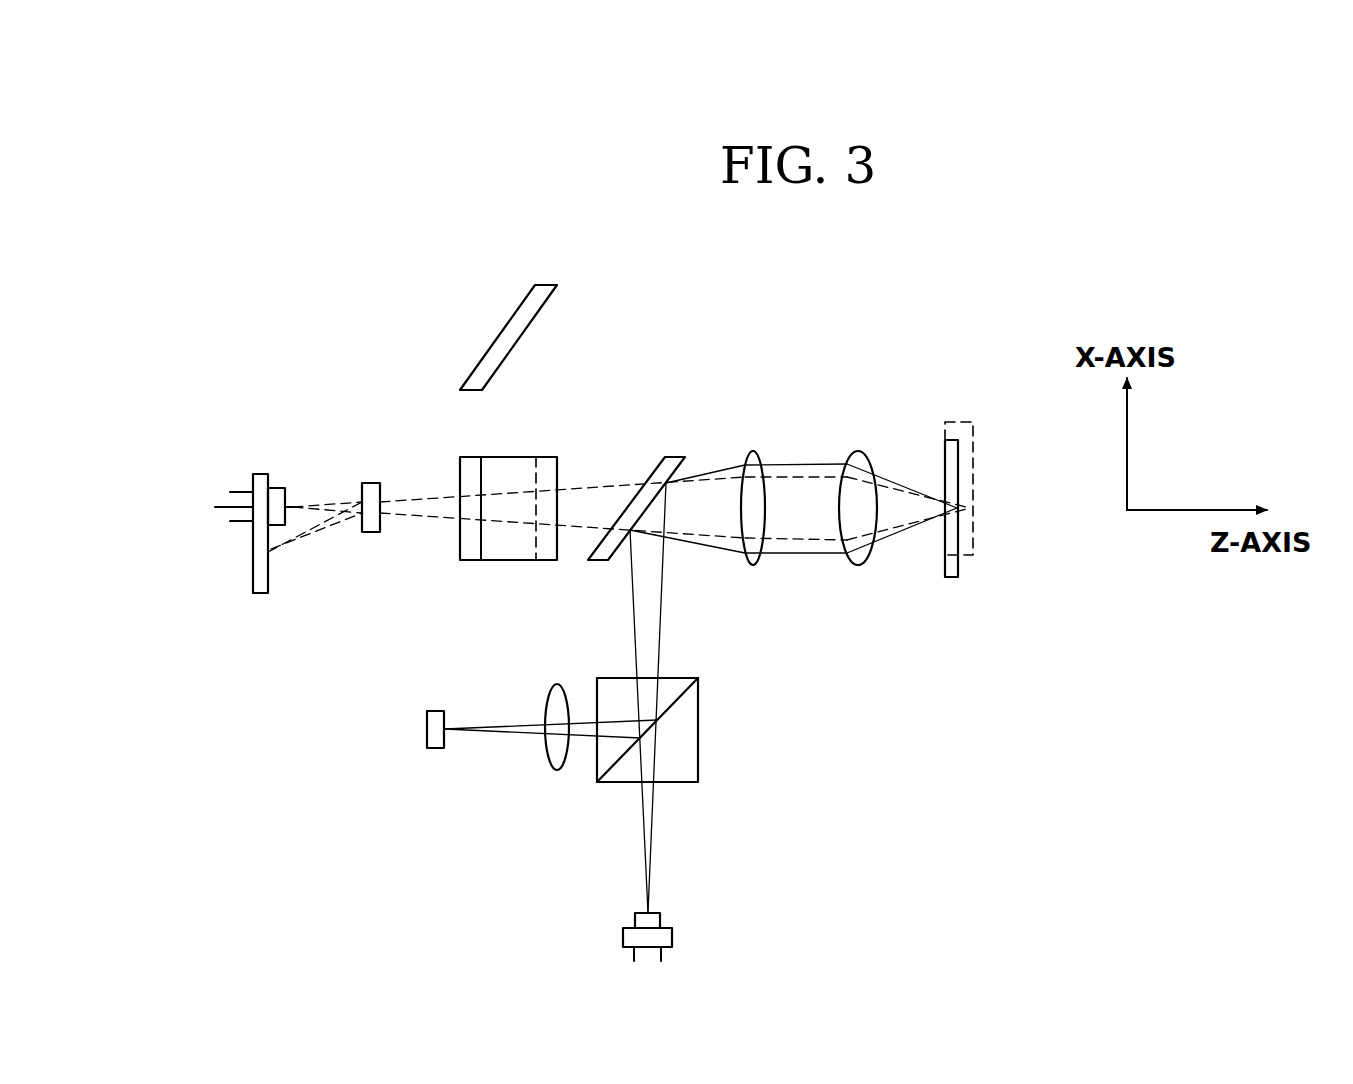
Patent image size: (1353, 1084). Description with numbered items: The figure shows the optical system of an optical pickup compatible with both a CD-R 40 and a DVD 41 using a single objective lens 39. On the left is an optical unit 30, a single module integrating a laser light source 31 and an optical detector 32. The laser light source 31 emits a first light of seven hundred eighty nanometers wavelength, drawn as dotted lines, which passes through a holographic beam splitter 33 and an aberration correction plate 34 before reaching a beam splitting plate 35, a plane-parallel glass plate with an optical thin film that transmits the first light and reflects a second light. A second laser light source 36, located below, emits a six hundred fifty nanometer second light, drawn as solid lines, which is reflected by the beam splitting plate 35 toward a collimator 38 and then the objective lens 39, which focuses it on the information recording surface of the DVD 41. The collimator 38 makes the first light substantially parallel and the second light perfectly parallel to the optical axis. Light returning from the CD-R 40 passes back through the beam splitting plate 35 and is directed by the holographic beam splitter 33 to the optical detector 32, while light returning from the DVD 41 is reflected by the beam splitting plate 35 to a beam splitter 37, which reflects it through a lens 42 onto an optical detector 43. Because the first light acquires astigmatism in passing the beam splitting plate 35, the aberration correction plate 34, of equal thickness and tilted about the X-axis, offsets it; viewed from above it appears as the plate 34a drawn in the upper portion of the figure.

The optical unit 30 is at (240, 508).
The laser light source 31 is at (277, 489).
The optical detector 32 is at (268, 578).
The holographic beam splitter 33 is at (370, 483).
The aberration correction plate 34 is at (558, 478).
The aberration correction plate 34a is at (547, 286).
The beam splitting plate 35 is at (677, 457).
The laser light source 36 is at (673, 938).
The beam splitter 37 is at (700, 737).
The collimator 38 is at (755, 563).
The objective lens 39 is at (858, 452).
The CD-R 40 is at (973, 463).
The DVD 41 is at (953, 578).
The lens 42 is at (557, 684).
The optical detector 43 is at (437, 710).